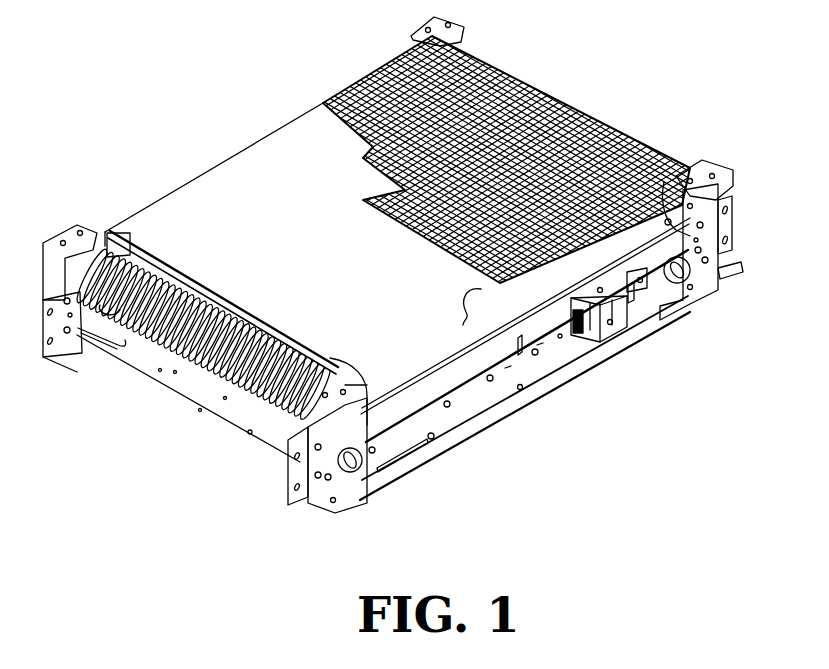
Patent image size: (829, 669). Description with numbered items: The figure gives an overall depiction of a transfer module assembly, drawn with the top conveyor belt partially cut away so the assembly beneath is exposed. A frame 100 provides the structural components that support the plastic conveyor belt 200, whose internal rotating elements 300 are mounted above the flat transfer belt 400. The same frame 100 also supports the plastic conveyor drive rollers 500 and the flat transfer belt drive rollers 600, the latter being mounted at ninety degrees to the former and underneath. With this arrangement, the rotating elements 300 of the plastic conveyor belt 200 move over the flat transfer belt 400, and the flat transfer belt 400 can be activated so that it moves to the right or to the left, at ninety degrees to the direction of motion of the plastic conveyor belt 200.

The frame 100 is at (482, 395).
The plastic conveyor belt 200 is at (392, 62).
The internal rotating elements 300 is at (323, 103).
The flat transfer belt 400 is at (473, 308).
The plastic conveyor drive rollers 500 is at (190, 402).
The flat transfer belt drive rollers 600 is at (593, 263).